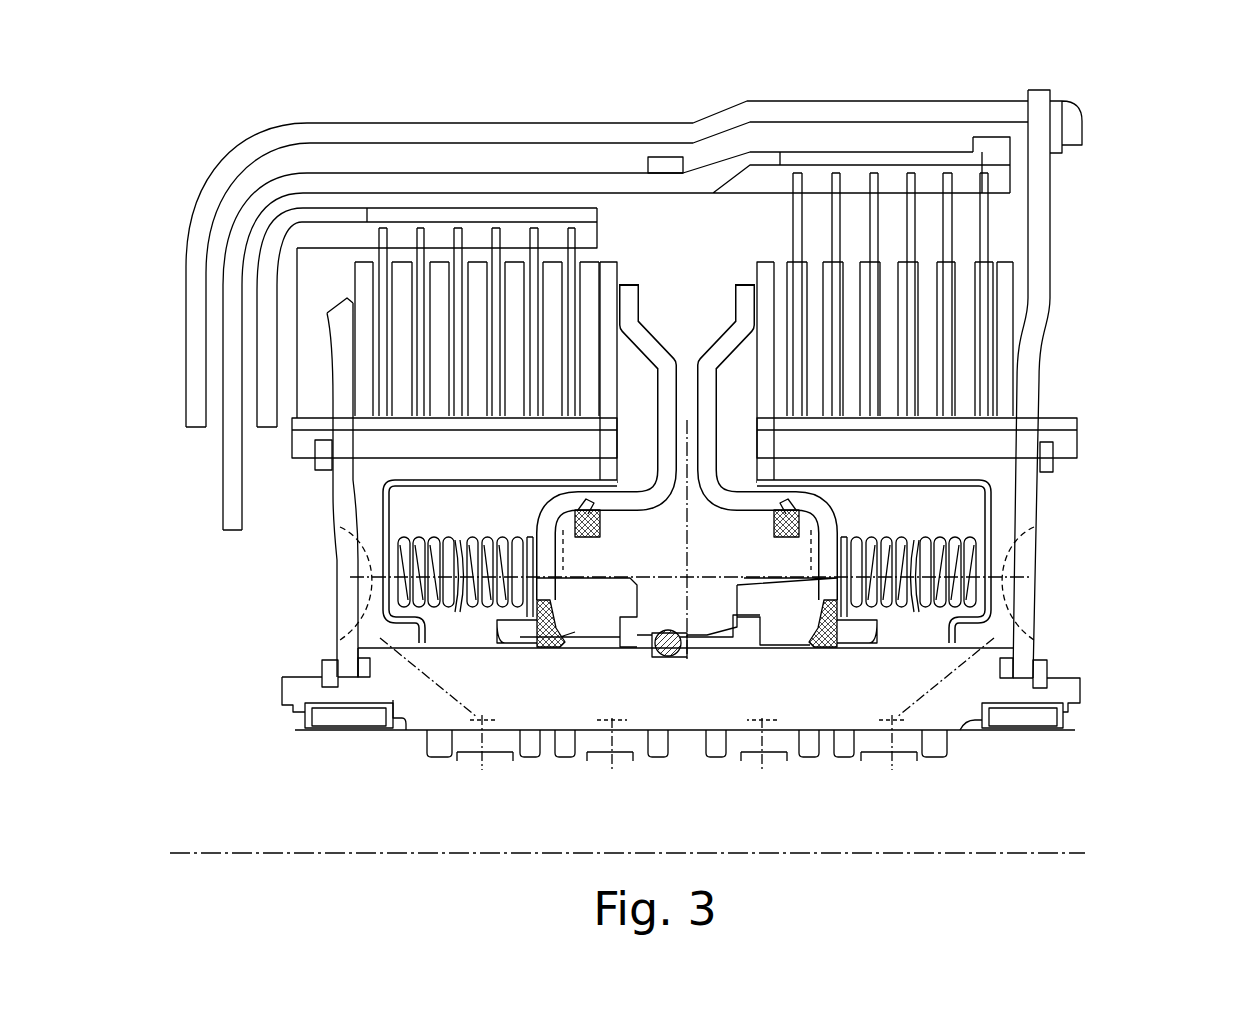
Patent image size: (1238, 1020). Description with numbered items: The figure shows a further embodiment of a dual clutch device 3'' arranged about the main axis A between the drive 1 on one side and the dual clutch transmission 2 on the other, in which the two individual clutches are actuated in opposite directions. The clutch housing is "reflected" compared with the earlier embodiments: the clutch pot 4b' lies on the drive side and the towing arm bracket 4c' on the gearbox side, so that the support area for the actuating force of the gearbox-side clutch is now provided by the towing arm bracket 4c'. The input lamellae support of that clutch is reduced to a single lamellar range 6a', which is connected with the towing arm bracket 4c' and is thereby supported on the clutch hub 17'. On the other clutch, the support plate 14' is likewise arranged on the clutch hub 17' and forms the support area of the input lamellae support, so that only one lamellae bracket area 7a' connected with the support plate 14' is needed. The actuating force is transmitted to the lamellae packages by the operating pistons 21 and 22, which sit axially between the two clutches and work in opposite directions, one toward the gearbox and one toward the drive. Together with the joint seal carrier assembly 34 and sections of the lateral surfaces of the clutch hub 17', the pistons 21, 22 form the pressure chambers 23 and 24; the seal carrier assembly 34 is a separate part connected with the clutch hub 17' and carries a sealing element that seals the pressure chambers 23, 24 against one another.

The clutch pot 4b' is at (634, 288).
The towing arm bracket 4c' is at (1080, 384).
The lamellar range 6a' is at (938, 400).
The lamellae bracket area 7a' is at (366, 443).
The support plate 14' is at (237, 487).
The clutch hub 17' is at (708, 659).
The operating piston 21 is at (857, 630).
The operating piston 22 is at (513, 630).
The pressure chamber 23 is at (777, 603).
The pressure chamber 24 is at (590, 627).
The joint seal carrier assembly 34 is at (688, 612).
The dual clutch device 3'' is at (1158, 159).
The main axis A is at (1085, 853).
The drive 1 is at (141, 854).
The dual clutch transmission 2 is at (1168, 854).